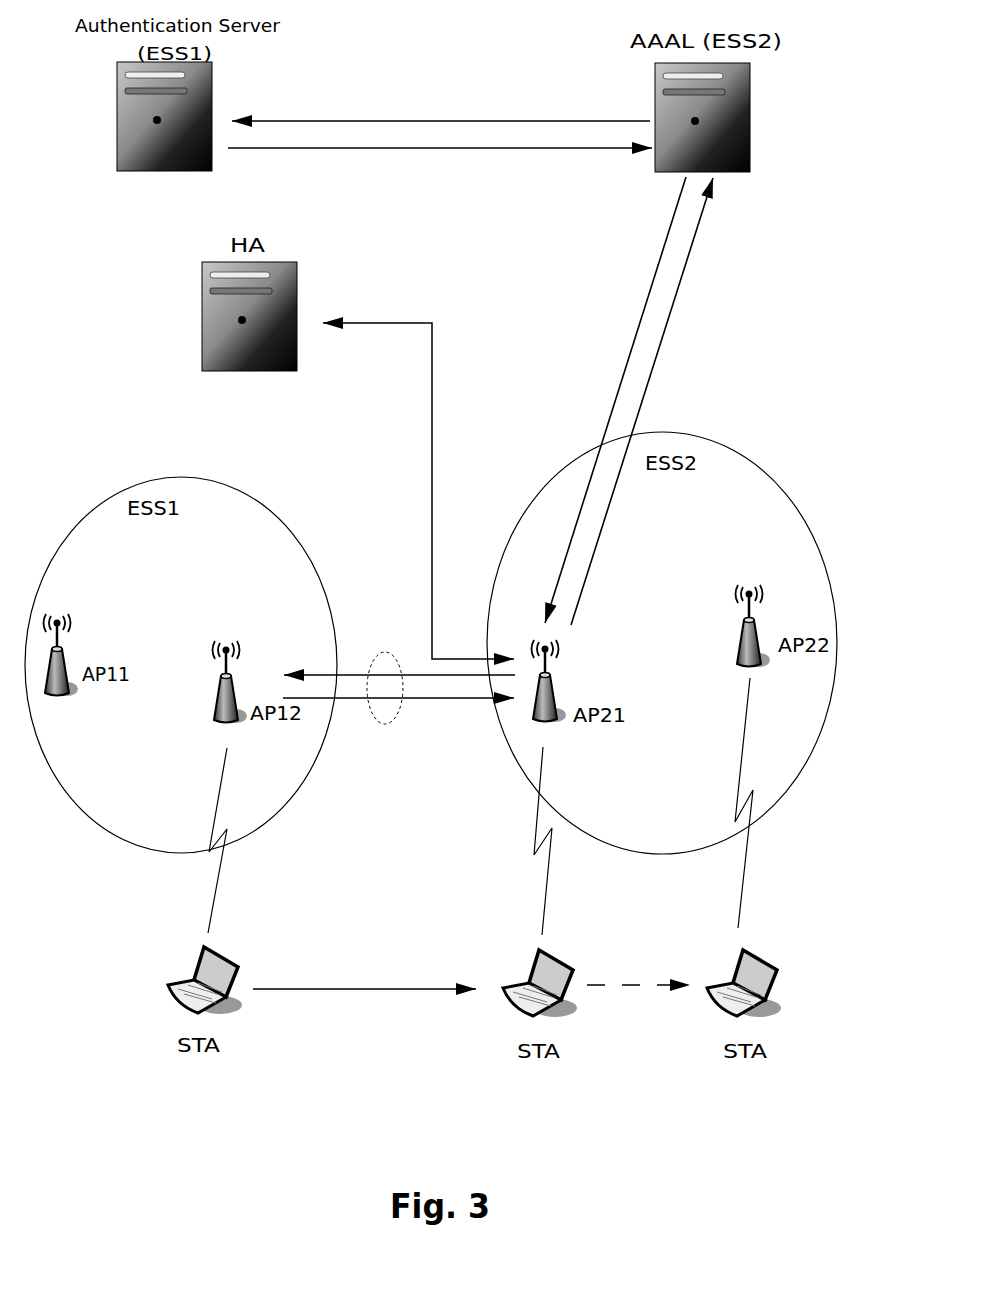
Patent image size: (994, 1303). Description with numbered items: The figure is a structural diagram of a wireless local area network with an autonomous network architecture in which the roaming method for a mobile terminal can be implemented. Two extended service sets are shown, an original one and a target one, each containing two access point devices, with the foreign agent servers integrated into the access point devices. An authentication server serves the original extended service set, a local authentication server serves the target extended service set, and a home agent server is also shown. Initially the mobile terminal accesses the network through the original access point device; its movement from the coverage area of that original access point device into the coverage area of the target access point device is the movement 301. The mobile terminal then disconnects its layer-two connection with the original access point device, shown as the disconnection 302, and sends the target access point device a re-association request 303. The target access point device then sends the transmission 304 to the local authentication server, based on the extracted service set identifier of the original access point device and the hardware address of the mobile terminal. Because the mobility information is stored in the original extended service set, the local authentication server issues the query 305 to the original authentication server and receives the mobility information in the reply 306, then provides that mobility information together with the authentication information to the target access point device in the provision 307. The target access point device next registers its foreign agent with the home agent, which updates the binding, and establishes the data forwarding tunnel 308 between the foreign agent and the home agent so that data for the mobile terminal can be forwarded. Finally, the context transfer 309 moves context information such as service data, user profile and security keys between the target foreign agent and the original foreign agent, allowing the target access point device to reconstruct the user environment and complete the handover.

The movement of the mobile terminal STA from the coverage area of AP12 into the cove 301 is at (364, 978).
The disconnection of the Layer 2 connection with the AP device AP12 302 is at (234, 840).
The request for re-associating with the AP device AP21 303 is at (559, 841).
The transmission of the mobility information request to the local authentication ser 304 is at (642, 401).
The query to the authentication server in the ESS1 for the mobility information 305 is at (441, 109).
The reception of the mobility information from the authentication server 306 is at (440, 162).
The provision of the mobility information and authentication information to the AP d 307 is at (615, 400).
The data forwarding tunnel between the foreign agent server FA21 and the home agent 308 is at (418, 491).
The transfer of context information between the target foreign agent server FA21 and 309 is at (399, 705).